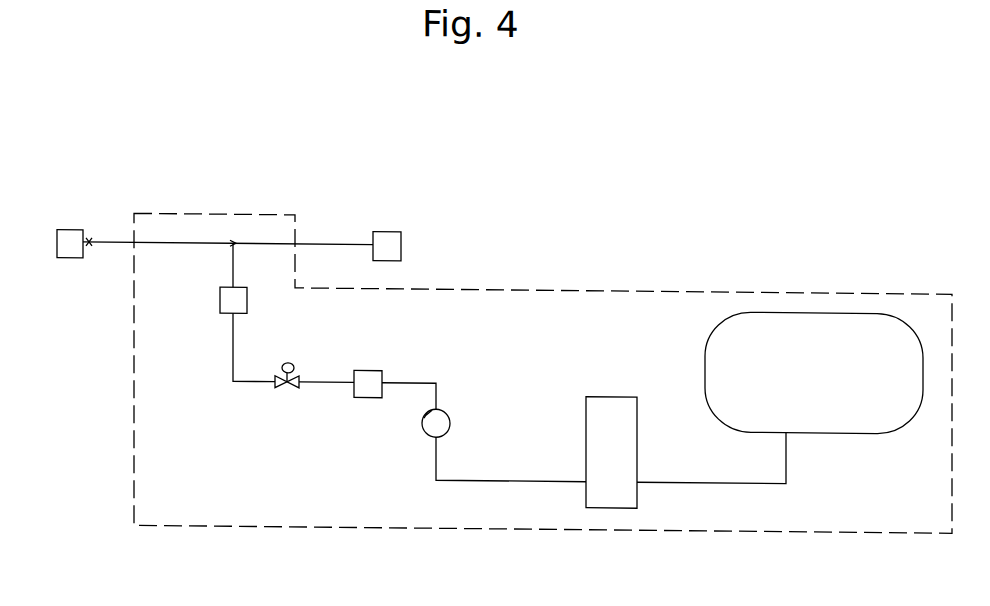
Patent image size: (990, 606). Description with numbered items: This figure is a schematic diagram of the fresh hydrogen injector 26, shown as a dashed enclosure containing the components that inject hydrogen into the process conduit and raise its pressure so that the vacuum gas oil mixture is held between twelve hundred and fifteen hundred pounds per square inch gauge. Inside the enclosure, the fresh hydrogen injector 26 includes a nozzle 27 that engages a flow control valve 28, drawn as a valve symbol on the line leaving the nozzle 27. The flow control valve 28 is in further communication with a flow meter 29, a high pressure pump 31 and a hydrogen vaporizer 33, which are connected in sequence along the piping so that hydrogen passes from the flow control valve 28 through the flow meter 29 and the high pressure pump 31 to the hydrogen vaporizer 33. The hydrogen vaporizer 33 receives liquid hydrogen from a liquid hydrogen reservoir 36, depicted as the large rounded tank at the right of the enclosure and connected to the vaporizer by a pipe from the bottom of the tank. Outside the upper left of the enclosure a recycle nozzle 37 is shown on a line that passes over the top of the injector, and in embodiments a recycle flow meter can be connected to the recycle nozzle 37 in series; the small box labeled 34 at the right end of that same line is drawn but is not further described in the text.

The fresh hydrogen injector 26 is at (478, 523).
The nozzle 27 is at (220, 295).
The flow control valve 28 is at (278, 392).
The flow meter 29 is at (375, 366).
The high pressure pump 31 is at (450, 421).
The hydrogen vaporizer 33 is at (593, 391).
The sensor connection port 34 is at (387, 228).
The liquid hydrogen reservoir 36 is at (822, 429).
The recycle nozzle 37 is at (72, 229).